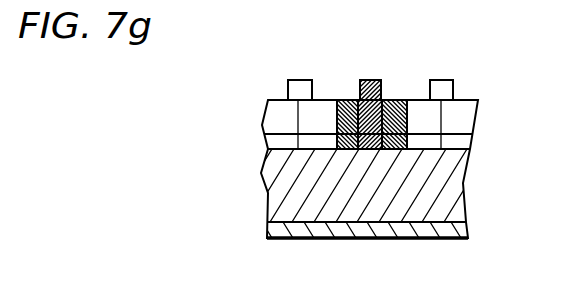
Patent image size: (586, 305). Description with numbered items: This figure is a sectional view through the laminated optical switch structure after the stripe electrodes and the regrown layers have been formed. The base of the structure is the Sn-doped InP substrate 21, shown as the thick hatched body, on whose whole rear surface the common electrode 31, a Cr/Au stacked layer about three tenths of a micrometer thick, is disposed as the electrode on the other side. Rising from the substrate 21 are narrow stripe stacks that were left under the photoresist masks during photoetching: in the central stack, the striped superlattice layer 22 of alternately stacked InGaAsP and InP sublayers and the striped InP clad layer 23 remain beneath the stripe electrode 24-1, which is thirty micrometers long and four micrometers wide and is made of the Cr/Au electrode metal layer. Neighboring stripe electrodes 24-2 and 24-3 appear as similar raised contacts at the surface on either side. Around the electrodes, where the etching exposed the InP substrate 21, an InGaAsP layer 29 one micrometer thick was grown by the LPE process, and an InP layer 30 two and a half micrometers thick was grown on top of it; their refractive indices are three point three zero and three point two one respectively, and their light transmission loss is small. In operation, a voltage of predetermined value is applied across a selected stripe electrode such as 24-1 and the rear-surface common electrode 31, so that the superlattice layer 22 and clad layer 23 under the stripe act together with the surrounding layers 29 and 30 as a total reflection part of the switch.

The substrate 21 is at (464, 183).
The layer of superlattice structure 22 is at (372, 149).
The InP clad layer 23 is at (388, 100).
The stripe electrode 24-1 is at (373, 82).
The stripe electrode 24-2 is at (447, 88).
The stripe electrode 24-3 is at (303, 92).
The InGaAsP layer 29 is at (340, 149).
The InP layer 30 is at (337, 100).
The common electrode 31 is at (369, 233).